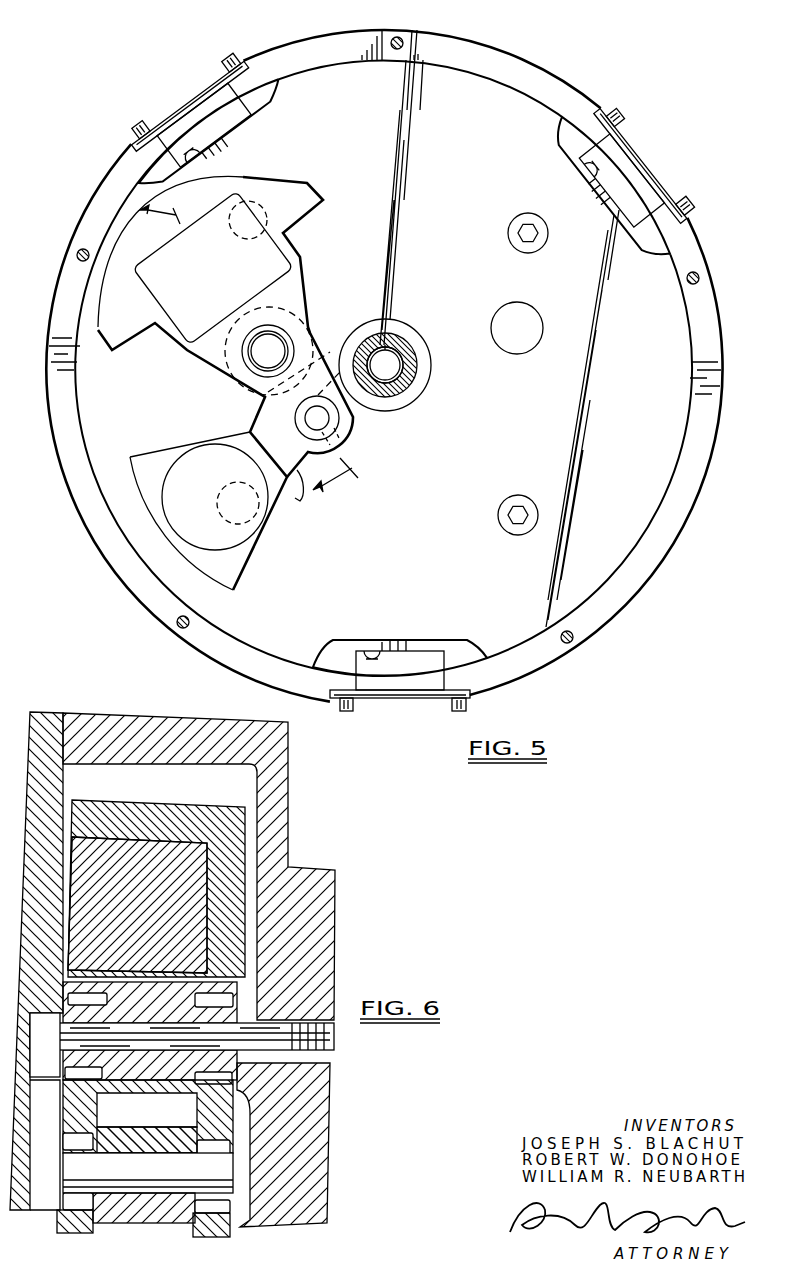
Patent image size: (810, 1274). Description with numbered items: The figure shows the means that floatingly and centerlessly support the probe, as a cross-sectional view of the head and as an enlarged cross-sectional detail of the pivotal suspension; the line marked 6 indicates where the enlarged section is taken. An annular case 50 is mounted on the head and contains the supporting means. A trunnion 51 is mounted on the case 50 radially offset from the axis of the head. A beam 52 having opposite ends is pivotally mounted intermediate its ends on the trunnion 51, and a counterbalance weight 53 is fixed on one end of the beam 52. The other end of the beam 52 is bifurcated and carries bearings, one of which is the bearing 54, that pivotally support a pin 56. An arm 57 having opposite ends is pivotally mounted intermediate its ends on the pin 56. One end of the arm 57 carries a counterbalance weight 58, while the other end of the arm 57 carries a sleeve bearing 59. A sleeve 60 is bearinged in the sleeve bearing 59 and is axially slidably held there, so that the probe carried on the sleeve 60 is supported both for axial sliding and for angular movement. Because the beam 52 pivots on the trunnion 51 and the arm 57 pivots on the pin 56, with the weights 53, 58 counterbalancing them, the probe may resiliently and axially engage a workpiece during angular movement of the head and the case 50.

In FIG. 5, the annular case 50 is at (682, 535).
In FIG. 6, the annular case 50 is at (338, 922).
In FIG. 5, the trunnion 51 is at (280, 359).
In FIG. 6, the trunnion 51 is at (340, 1042).
In FIG. 5, the beam 52 is at (303, 293).
In FIG. 6, the beam 52 is at (82, 1117).
In FIG. 5, the counterbalance weight 53 is at (275, 178).
In FIG. 6, the counterbalance weight 53 is at (158, 810).
In FIG. 5, the bearing 54 is at (323, 417).
In FIG. 6, the bearing 54 is at (217, 1143).
In FIG. 5, the pin 56 is at (333, 430).
In FIG. 6, the pin 56 is at (153, 1177).
In FIG. 5, the arm 57 is at (297, 500).
In FIG. 6, the arm 57 is at (173, 1130).
In FIG. 5, the counterbalance weight 58 is at (233, 565).
In FIG. 5, the sleeve bearing 59 is at (423, 383).
In FIG. 5, the sleeve 60 is at (408, 350).
In FIG. 5, the section line 6- 6 is at (241, 356).